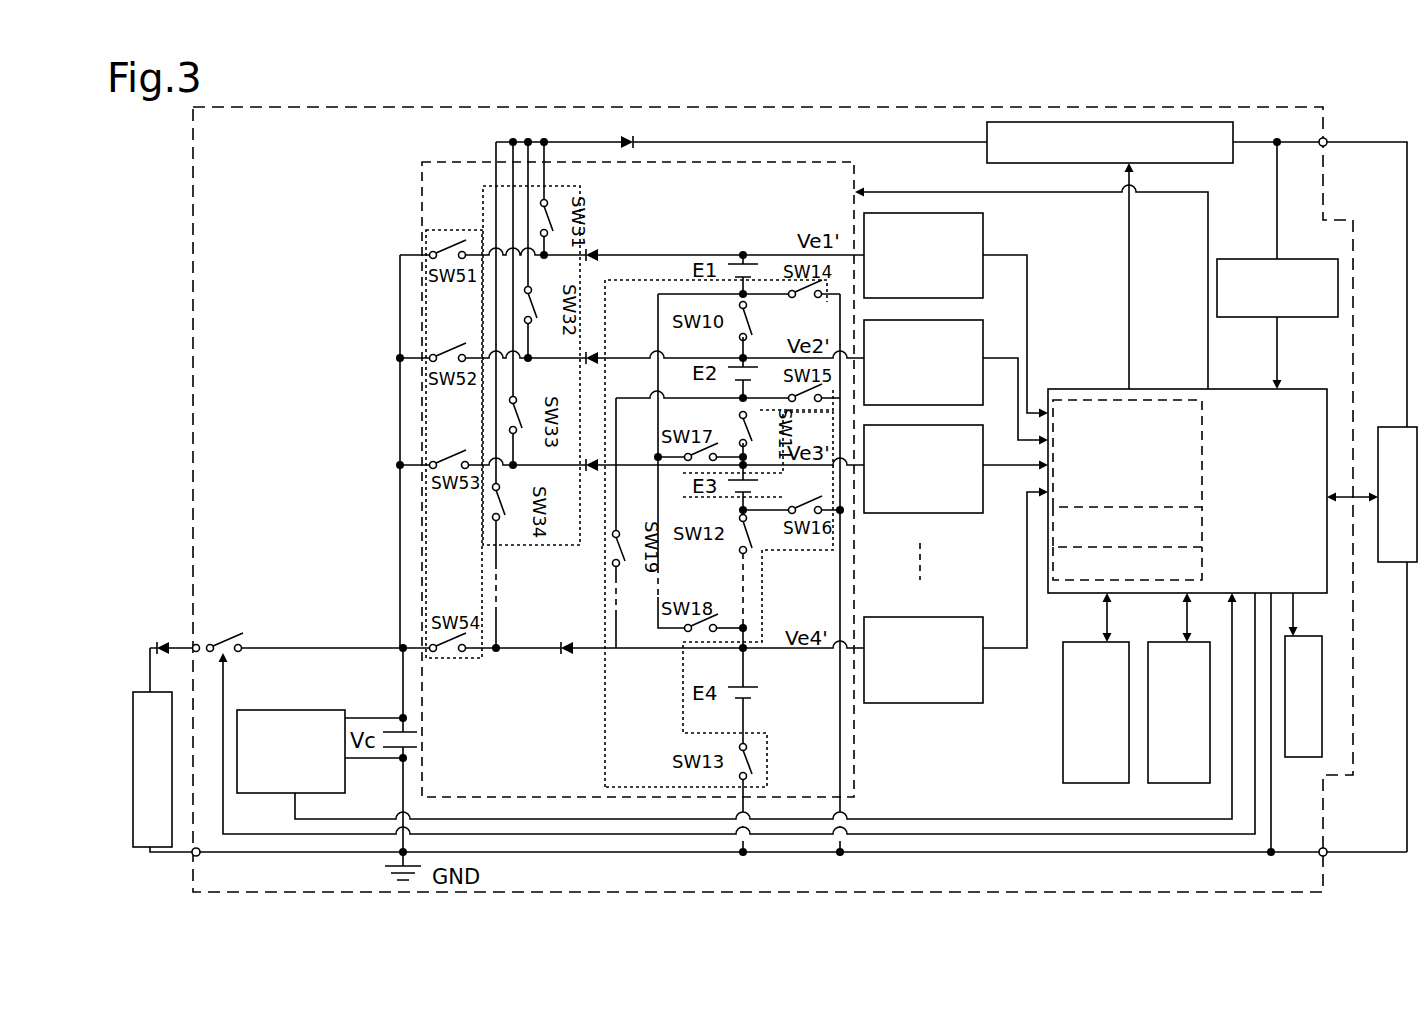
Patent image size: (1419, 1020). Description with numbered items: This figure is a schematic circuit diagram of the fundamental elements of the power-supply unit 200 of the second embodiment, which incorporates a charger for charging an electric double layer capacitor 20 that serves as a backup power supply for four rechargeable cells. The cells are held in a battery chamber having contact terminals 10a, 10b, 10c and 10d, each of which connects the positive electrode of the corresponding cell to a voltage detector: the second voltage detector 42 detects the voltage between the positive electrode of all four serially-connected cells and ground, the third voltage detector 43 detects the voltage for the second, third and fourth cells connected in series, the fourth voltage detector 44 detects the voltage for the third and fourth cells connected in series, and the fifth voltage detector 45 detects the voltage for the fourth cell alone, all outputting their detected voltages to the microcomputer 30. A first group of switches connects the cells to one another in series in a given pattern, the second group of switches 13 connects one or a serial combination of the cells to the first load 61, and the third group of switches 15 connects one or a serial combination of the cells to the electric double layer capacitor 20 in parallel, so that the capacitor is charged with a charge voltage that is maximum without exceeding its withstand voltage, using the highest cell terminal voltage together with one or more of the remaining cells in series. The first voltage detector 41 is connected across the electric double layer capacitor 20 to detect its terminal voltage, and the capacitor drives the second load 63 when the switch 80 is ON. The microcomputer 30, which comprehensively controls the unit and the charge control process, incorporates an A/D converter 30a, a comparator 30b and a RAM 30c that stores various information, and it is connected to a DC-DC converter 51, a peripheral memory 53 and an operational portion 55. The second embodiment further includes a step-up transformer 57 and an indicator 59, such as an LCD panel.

The power-supply unit 200 is at (1322, 118).
The second group of switches 13 is at (552, 528).
The third group of switches 15 is at (472, 229).
The contact terminal 10a is at (743, 254).
The contact terminal 10b is at (745, 356).
The contact terminal 10c is at (745, 468).
The contact terminal 10d is at (747, 652).
The second voltage detector 42 is at (938, 255).
The third voltage detector 43 is at (938, 362).
The fourth voltage detector 44 is at (938, 469).
The fifth voltage detector 45 is at (938, 660).
The microcomputer 30 is at (1195, 491).
The A/D converter 30a is at (1150, 453).
The comparator 30b is at (1150, 527).
The RAM 30c is at (1149, 563).
The step-up transformer 57 is at (1091, 139).
The DC-DC converter 51 is at (1277, 275).
The first load 61 is at (1397, 480).
The peripheral memory 53 is at (1099, 698).
The operational portion 55 is at (1183, 698).
The indicator 59 is at (1310, 683).
The switch 80 is at (226, 633).
The second load 63 is at (156, 757).
The first voltage detector 41 is at (291, 739).
The electric double layer capacitor 20 is at (396, 727).